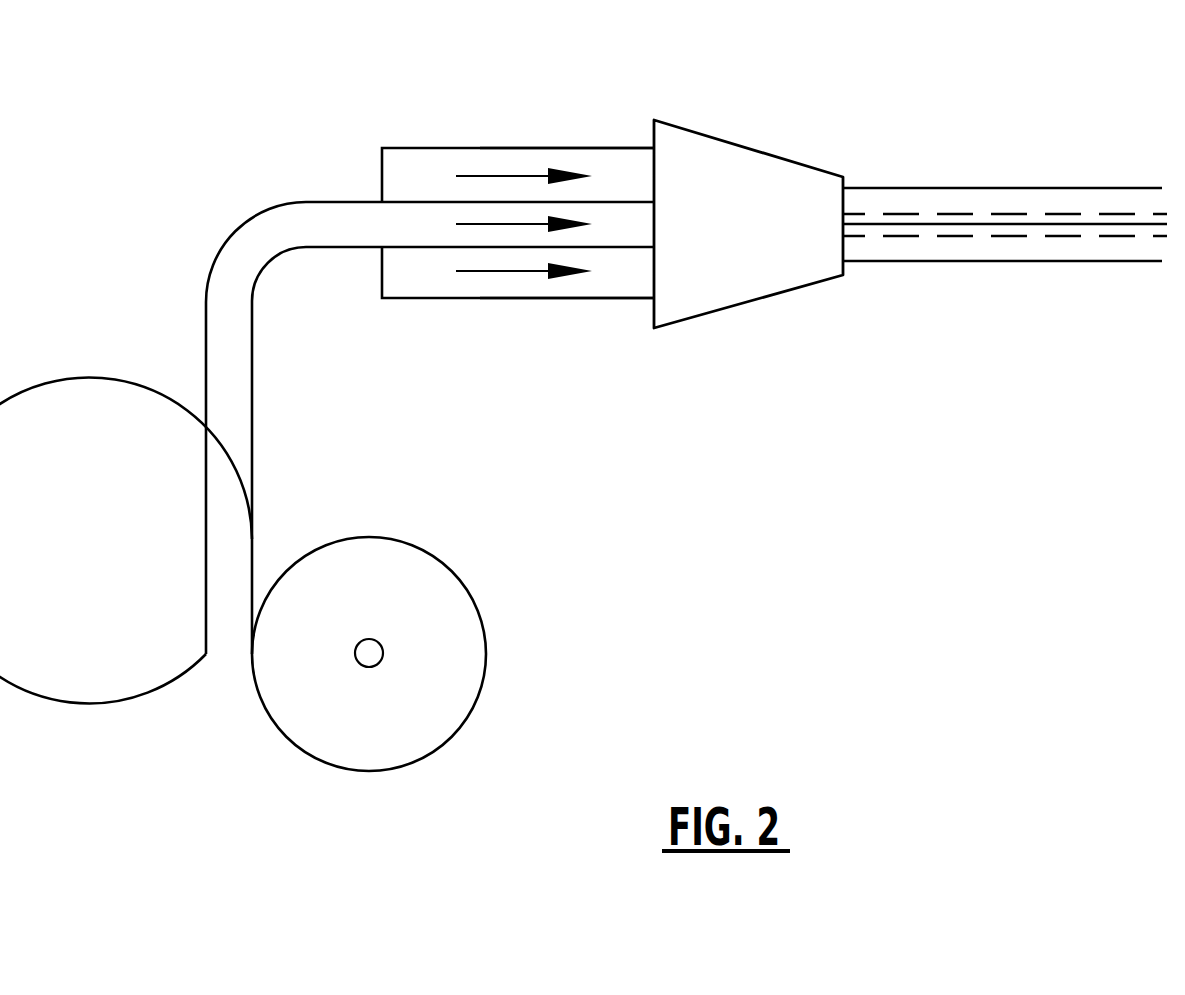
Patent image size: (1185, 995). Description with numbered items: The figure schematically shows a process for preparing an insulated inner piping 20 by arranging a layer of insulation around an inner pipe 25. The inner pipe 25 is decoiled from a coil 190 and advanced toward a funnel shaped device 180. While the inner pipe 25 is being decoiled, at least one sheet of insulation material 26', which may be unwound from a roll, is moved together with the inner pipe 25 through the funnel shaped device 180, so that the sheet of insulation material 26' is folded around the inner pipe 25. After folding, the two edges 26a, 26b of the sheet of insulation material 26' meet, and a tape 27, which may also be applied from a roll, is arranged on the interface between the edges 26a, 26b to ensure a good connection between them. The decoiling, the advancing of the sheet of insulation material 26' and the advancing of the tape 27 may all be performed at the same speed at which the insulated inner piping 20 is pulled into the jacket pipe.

The insulated inner piping 20 is at (1015, 158).
The inner pipe 25 is at (332, 223).
The sheet of insulation material 26' is at (518, 189).
The edge of the sheet of insulation material 26a is at (570, 148).
The edge of the sheet of insulation material 26b is at (596, 299).
The tape 27 is at (945, 229).
The funnel shaped device 180 is at (759, 151).
The coil 190 is at (580, 643).